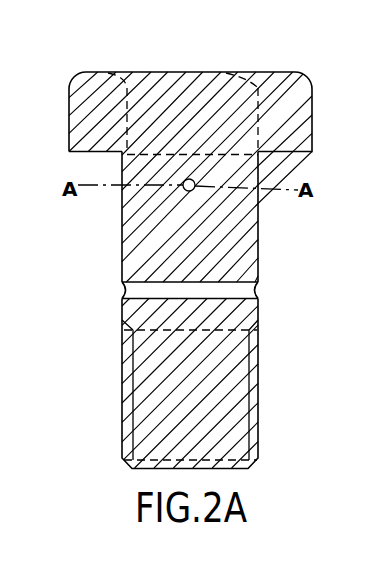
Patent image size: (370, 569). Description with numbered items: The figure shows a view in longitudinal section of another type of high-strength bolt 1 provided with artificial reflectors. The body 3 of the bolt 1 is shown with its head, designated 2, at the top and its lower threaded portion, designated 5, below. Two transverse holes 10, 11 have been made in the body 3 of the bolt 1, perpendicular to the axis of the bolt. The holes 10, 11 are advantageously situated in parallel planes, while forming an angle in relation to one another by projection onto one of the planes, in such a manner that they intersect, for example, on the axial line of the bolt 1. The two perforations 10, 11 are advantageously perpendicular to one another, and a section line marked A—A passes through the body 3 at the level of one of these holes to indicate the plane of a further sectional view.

The bolt 1 is at (234, 94).
The head 2 is at (90, 107).
The body 3 is at (238, 250).
The threaded portion 5 is at (128, 398).
The transverse hole 10 is at (196, 178).
The transverse hole 11 is at (160, 282).